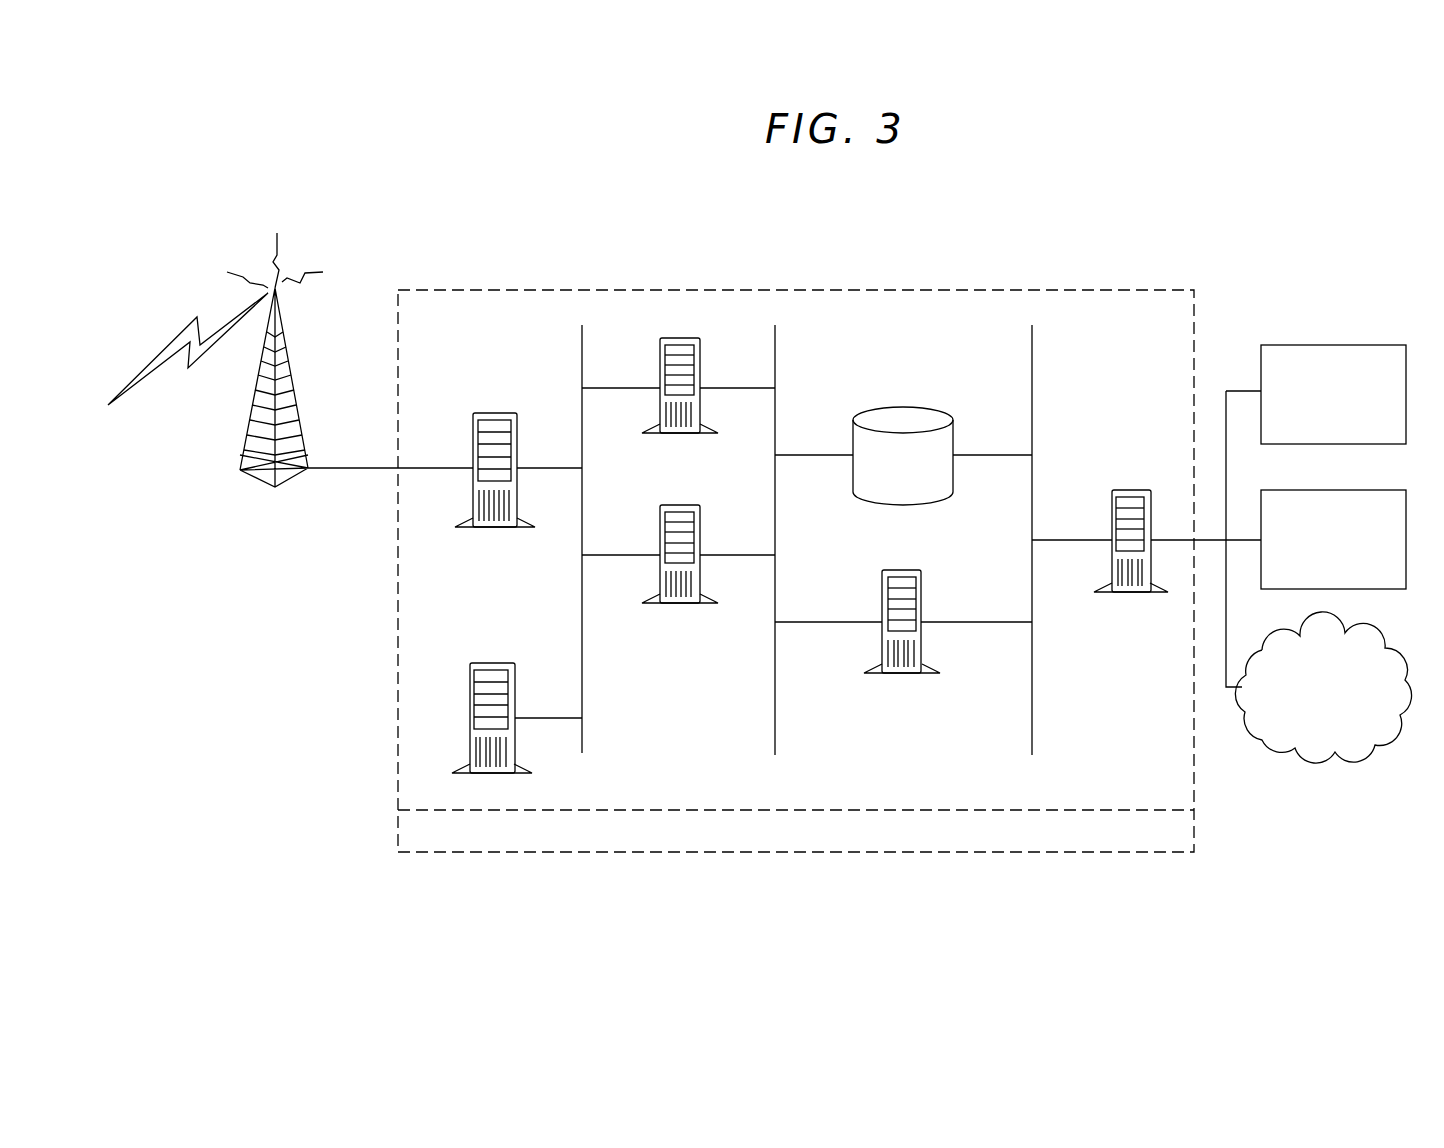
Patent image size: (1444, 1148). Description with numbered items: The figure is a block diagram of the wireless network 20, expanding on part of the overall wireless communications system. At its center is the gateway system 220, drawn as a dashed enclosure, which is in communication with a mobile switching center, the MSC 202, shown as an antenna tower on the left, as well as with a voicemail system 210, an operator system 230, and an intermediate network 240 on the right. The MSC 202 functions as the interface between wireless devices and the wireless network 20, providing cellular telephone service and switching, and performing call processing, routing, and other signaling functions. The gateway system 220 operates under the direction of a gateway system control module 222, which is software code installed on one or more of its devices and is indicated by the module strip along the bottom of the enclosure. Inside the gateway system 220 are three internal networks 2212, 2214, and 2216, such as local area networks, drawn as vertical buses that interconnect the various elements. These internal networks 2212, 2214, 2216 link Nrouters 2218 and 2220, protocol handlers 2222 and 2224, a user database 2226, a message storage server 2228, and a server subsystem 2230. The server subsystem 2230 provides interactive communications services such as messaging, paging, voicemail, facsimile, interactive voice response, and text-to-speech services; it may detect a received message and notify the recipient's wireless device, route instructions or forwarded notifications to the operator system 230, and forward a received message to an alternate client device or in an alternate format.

The wireless network 20 is at (903, 250).
The mobile switching center (MSC) 202 is at (291, 372).
The voicemail system 210 is at (1330, 345).
The gateway system 220 is at (819, 290).
The gateway system control module 222 is at (396, 825).
The operator system 230 is at (1332, 490).
The intermediate network 240 is at (1395, 660).
The internal network 2212 is at (582, 718).
The internal network 2214 is at (775, 742).
The internal network 2216 is at (1032, 727).
The Nrouter 2218 is at (507, 413).
The Nrouter 2220 is at (487, 663).
The protocol handler 2222 is at (657, 372).
The protocol handler 2224 is at (657, 537).
The user database 2226 is at (857, 412).
The message storage server 2228 is at (878, 588).
The server subsystem 2230 is at (1122, 490).